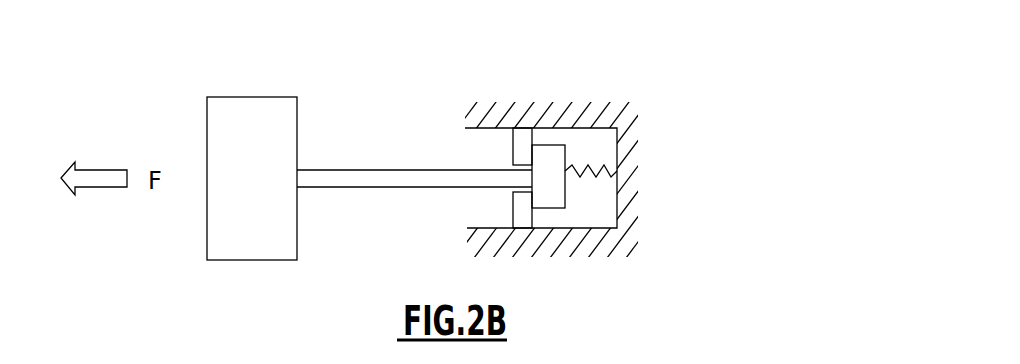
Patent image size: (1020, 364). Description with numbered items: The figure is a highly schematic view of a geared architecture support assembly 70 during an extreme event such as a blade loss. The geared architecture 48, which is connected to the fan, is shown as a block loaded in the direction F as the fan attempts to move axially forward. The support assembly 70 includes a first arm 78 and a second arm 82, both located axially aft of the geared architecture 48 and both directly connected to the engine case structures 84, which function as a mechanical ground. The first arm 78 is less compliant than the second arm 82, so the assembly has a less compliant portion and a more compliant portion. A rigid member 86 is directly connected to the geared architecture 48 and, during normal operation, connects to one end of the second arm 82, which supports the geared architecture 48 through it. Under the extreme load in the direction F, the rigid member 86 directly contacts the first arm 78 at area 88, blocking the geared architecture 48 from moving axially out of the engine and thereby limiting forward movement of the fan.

The geared architecture 48 is at (265, 132).
The geared architecture support assembly 70 is at (642, 93).
The first arm 78 is at (513, 143).
The second arm 82 is at (598, 172).
The engine case structures 84 is at (584, 224).
The rigid member 86 is at (563, 182).
The area 88 is at (532, 150).